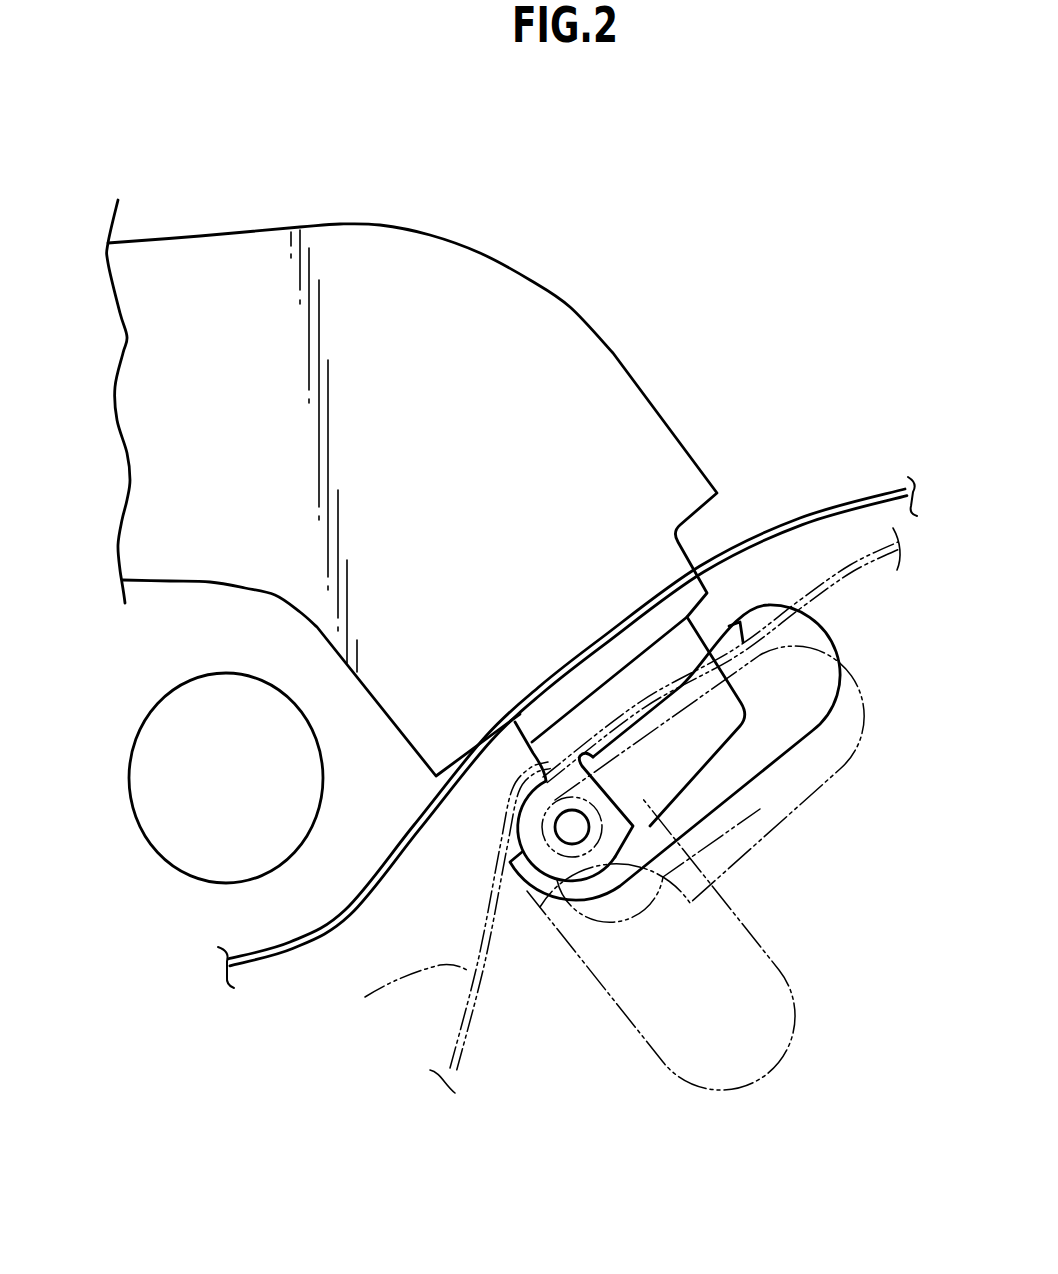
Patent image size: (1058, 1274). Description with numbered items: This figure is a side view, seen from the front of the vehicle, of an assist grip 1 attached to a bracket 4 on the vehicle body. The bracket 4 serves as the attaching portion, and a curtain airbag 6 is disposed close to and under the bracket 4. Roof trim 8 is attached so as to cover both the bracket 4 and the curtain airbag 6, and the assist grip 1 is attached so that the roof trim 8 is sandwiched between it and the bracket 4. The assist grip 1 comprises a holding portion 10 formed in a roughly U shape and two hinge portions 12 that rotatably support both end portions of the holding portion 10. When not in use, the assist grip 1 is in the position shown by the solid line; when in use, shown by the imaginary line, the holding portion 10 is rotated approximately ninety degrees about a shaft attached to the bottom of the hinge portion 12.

The assist grip 1 is at (842, 633).
The bracket 4 is at (557, 317).
The curtain airbag 6 is at (150, 792).
The roof trim 8 is at (345, 911).
The holding portion 10 is at (814, 728).
The hinge portions 12 is at (708, 776).